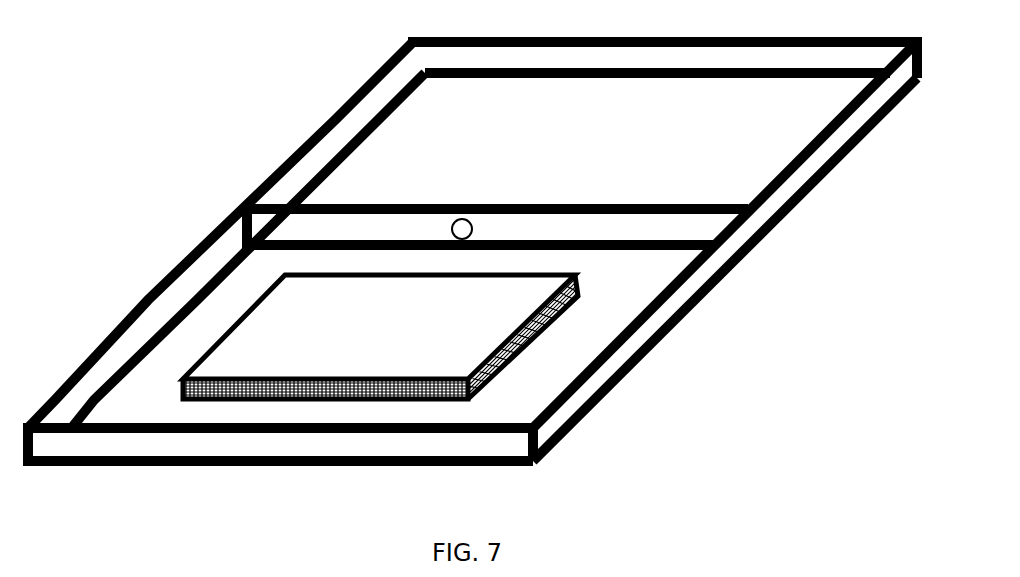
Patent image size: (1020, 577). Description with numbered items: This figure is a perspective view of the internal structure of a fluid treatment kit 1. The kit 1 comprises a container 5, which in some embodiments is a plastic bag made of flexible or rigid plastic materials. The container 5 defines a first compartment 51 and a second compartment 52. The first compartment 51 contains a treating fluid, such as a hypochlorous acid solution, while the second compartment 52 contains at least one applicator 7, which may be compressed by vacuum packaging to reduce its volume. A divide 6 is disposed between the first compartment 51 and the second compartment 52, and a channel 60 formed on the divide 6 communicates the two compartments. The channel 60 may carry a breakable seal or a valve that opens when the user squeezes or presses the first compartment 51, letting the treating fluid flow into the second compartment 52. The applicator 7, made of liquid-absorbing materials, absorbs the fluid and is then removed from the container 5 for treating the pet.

The fluid treatment kit 1 is at (272, 95).
The container 5 is at (817, 153).
The first compartment 51 is at (415, 128).
The second compartment 52 is at (187, 342).
The divide 6 is at (617, 230).
The channel 60 is at (470, 237).
The applicator 7 is at (278, 322).